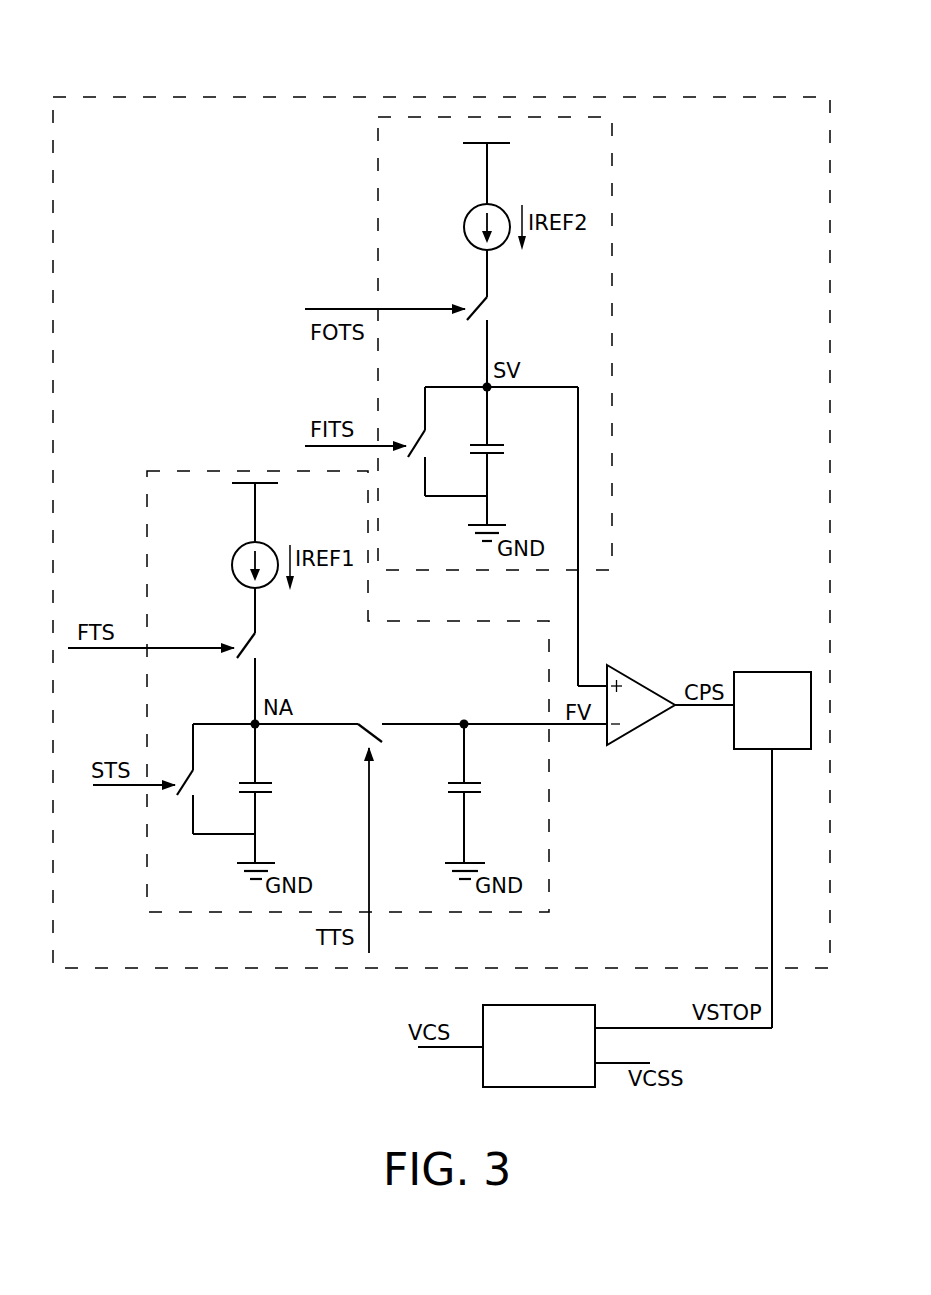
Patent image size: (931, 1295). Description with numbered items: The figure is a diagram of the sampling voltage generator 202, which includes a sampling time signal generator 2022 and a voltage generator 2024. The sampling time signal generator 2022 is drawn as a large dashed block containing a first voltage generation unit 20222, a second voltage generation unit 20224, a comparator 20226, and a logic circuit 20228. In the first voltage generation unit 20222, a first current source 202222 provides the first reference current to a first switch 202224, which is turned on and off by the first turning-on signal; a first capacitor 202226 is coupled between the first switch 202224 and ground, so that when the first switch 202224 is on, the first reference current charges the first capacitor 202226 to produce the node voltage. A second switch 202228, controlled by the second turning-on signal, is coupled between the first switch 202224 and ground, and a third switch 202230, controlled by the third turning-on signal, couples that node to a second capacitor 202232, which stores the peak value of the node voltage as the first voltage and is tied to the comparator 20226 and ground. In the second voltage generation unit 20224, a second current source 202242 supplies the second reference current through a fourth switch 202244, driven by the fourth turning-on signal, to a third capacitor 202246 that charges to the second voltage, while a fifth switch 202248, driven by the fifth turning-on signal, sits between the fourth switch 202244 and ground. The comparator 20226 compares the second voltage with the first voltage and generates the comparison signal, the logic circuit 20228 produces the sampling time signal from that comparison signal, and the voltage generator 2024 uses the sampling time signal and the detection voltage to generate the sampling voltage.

The sampling voltage generator 202 is at (245, 62).
The sampling time signal generator 2022 is at (485, 97).
The second voltage generation unit 20224 is at (612, 222).
The second current source 202242 is at (503, 205).
The fourth switch 202244 is at (497, 309).
The third capacitor 202246 is at (516, 426).
The fifth switch 202248 is at (412, 466).
The first voltage generation unit 20222 is at (549, 810).
The first current source 202222 is at (271, 543).
The first switch 202224 is at (266, 646).
The first capacitor 202226 is at (268, 777).
The second switch 202228 is at (182, 803).
The third switch 202230 is at (372, 720).
The second capacitor 202232 is at (476, 777).
The comparator 20226 is at (643, 680).
The logic circuit 20228 is at (772, 672).
The voltage generator 2024 is at (553, 1005).